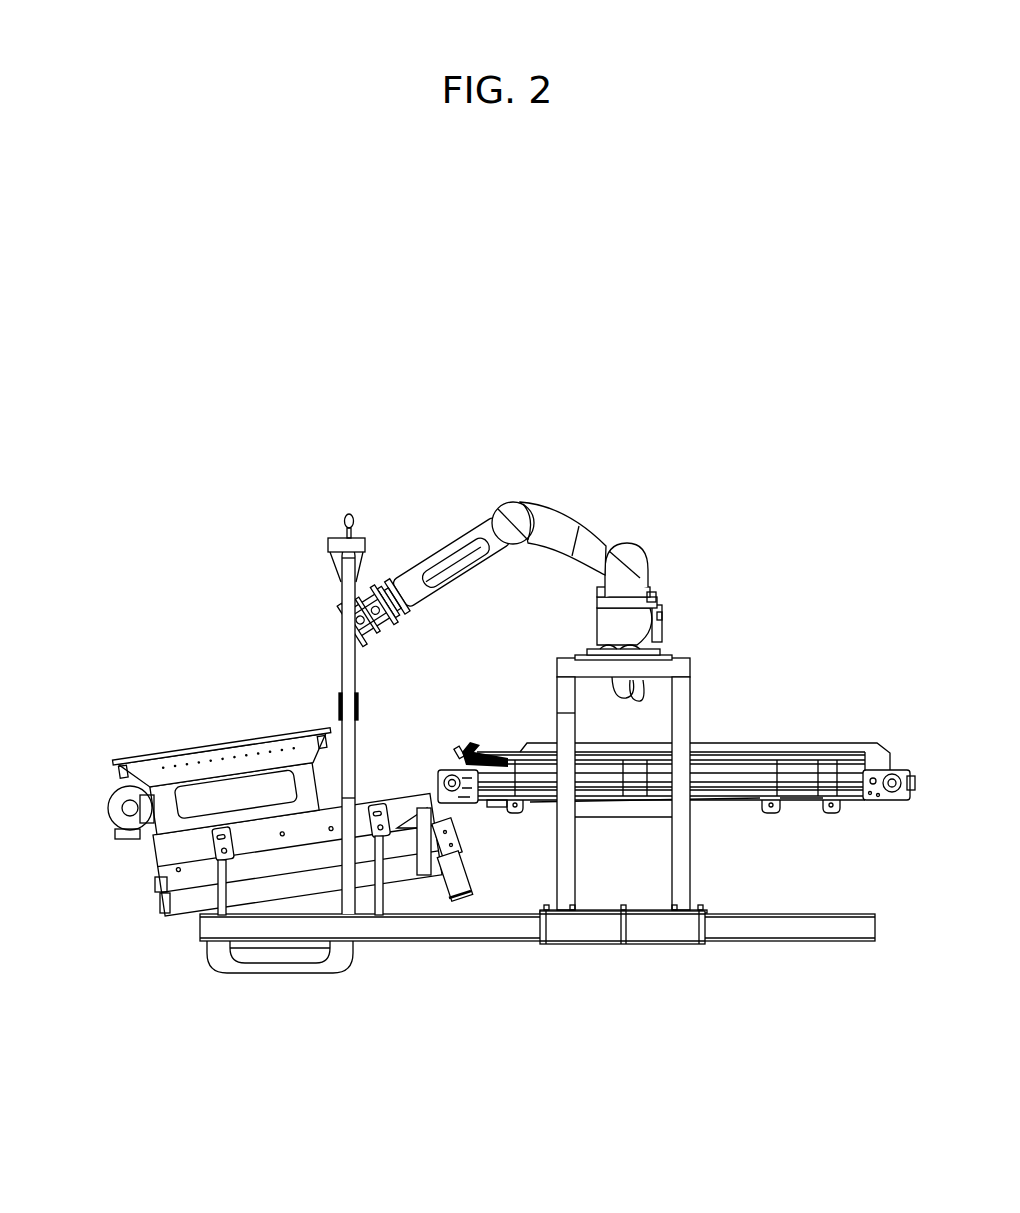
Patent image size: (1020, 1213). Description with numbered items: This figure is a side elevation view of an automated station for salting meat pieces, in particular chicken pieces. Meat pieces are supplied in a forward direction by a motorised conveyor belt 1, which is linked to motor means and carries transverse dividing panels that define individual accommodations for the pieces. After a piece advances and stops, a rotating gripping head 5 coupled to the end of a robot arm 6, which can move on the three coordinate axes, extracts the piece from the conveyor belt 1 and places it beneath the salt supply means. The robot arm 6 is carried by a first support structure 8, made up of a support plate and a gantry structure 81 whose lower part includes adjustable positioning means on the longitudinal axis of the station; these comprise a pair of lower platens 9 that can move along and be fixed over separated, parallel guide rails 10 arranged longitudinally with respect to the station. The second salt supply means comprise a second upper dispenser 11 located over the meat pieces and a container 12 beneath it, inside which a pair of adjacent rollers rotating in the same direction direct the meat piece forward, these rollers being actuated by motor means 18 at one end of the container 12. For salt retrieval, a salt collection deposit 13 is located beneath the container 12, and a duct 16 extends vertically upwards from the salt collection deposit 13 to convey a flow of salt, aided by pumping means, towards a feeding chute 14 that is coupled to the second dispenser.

The conveyor belt 1 is at (743, 765).
The rotating gripping head 5 is at (377, 557).
The robot arm 6 is at (549, 498).
The first support structure 8 is at (701, 590).
The gantry structure 81 is at (680, 865).
The lower platens 9 is at (665, 933).
The guide rails 10 is at (503, 932).
The second upper dispenser 11 is at (157, 766).
The container 12 is at (167, 855).
The salt collection deposit 13 is at (160, 905).
The feeding chute 14 is at (340, 546).
The duct 16 is at (342, 652).
The motor means 18 is at (449, 845).